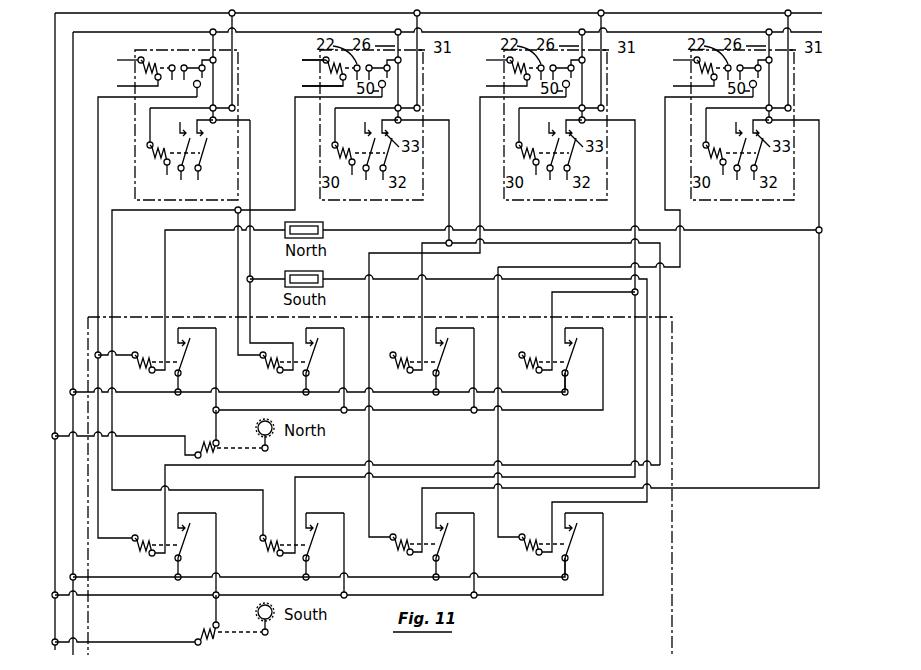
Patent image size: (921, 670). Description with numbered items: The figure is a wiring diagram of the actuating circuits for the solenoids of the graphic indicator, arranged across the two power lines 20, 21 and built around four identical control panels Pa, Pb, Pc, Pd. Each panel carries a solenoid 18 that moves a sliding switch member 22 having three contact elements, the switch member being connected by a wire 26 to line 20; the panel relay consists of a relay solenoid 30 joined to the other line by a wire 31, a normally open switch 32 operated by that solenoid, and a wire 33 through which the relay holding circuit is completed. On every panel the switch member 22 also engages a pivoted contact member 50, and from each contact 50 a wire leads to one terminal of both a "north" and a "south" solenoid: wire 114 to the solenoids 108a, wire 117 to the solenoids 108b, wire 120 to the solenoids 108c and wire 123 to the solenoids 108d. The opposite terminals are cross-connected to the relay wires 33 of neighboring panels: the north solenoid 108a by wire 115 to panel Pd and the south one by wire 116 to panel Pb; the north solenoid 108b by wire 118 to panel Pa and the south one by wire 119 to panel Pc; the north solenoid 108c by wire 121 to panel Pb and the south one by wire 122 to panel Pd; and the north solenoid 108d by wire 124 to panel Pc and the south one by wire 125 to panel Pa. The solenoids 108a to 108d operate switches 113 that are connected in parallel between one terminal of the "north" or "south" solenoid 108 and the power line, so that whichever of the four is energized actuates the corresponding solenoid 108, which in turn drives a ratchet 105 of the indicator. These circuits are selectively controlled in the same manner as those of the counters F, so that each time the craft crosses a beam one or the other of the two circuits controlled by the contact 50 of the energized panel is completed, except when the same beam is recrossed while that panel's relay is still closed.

The solenoid 18 is at (314, 73).
The line 20 is at (75, 655).
The line 21 is at (436, 341).
The sliding switch member 22 is at (172, 64).
The wire 26 is at (210, 46).
The relay solenoid 30 is at (153, 150).
The wire 31 is at (233, 50).
The normally open switch 32 is at (196, 157).
The wire 33 is at (200, 133).
The pivoted contact member 50 is at (194, 91).
The ratchet 105 is at (264, 529).
The solenoid 108 is at (198, 636).
The solenoid 108a is at (122, 565).
The solenoid 108b is at (270, 372).
The solenoid 108c is at (402, 360).
The solenoid 108d is at (515, 565).
The switch 113 is at (389, 461).
The wire 114 is at (99, 173).
The wire 115 is at (165, 286).
The wire 116 is at (449, 172).
The wire 117 is at (295, 182).
The wire 118 is at (252, 138).
The wire 119 is at (635, 130).
The wire 120 is at (485, 219).
The wire 121 is at (422, 312).
The wire 122 is at (731, 488).
The wire 123 is at (680, 214).
The wire 124 is at (579, 293).
The wire 125 is at (270, 279).
The counter F is at (323, 226).
The control panel Pa is at (238, 102).
The control panel Pb is at (378, 105).
The control panel Pc is at (561, 105).
The control panel Pd is at (748, 105).